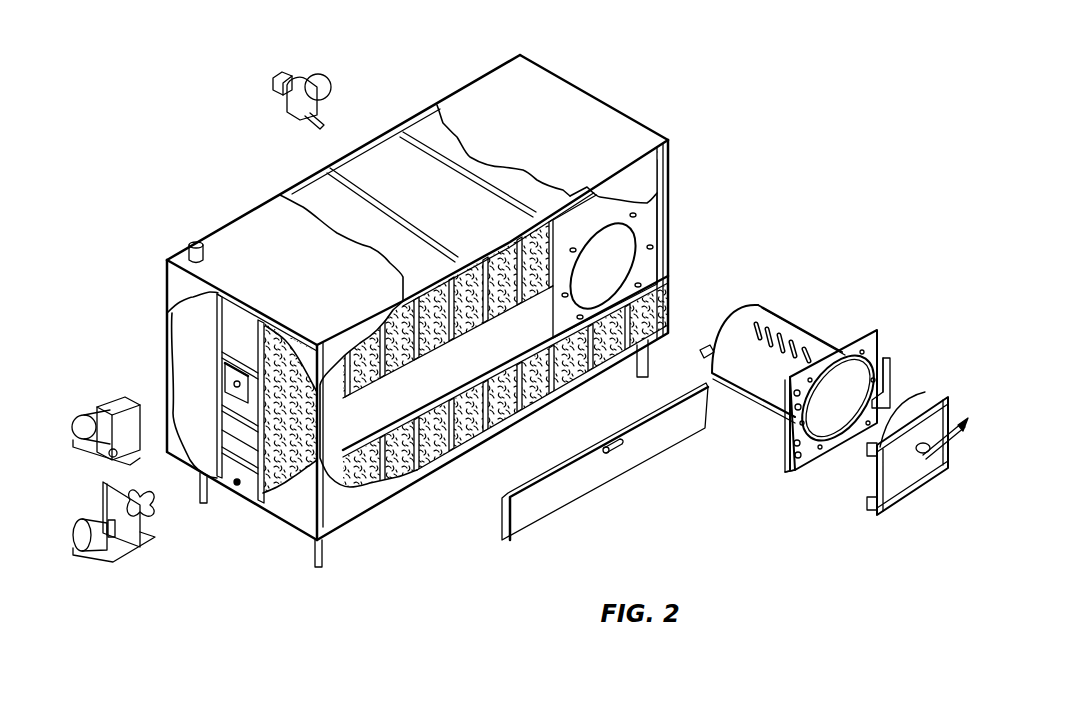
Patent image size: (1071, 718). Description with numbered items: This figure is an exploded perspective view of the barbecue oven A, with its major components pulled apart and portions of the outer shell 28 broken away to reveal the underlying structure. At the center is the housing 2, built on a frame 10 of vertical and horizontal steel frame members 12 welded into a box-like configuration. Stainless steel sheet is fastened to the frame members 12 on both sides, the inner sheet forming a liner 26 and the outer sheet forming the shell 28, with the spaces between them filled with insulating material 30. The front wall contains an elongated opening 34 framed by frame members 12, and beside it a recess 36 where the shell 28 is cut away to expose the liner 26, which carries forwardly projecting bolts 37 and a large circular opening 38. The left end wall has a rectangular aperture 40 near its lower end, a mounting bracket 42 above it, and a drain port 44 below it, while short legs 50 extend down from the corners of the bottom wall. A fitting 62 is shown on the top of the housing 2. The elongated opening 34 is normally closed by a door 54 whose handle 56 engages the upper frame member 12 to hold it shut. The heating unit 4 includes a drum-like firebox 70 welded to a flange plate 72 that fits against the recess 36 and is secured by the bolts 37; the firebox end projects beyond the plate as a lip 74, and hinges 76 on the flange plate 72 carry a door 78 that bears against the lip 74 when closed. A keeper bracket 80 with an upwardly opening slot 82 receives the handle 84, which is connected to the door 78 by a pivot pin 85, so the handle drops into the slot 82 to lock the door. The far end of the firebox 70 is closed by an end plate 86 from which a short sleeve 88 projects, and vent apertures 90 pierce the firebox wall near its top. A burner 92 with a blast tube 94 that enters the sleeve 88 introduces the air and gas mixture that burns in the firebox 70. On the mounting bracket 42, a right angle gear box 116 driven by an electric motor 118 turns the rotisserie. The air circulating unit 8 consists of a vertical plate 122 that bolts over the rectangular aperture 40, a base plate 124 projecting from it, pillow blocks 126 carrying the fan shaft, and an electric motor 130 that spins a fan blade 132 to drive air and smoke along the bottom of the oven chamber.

The housing 2 is at (606, 88).
The oven A is at (675, 82).
The heating unit 4 is at (334, 55).
The air circulating unit 8 is at (107, 582).
The frame 10 is at (448, 478).
The frame members 12 is at (442, 172).
The liner 26 is at (423, 112).
The shell 28 is at (497, 85).
The insulating material 30 is at (502, 405).
The elongated opening 34 is at (406, 412).
The recess 36 is at (636, 215).
The bolts 37 is at (652, 246).
The circular opening 38 is at (609, 293).
The rectangular aperture 40 is at (237, 455).
The mounting bracket 42 is at (228, 381).
The drain port 44 is at (237, 487).
The legs 50 is at (315, 560).
The door 54 is at (545, 512).
The handle 56 is at (625, 448).
The vent fitting 62 is at (192, 243).
The firebox 70 is at (808, 325).
The flange plate 72 is at (870, 340).
The lip 74 is at (813, 453).
The hinges 76 is at (795, 397).
The door 78 is at (890, 500).
The keeper bracket 80 is at (893, 392).
The slot 82 is at (892, 365).
The handle 84 is at (960, 440).
The pivot pin 85 is at (925, 480).
The end plate 86 is at (735, 315).
The sleeve 88 is at (703, 370).
The vent apertures 90 is at (785, 332).
The burner 92 is at (292, 103).
The blast tube 94 is at (308, 133).
The right angle gear box 116 is at (117, 460).
The electric motor 118 is at (95, 407).
The vertical plate 122 is at (103, 500).
The base plate 124 is at (110, 555).
The pillow blocks 126 is at (128, 538).
The electric motor 130 is at (73, 542).
The fan blade 132 is at (150, 490).